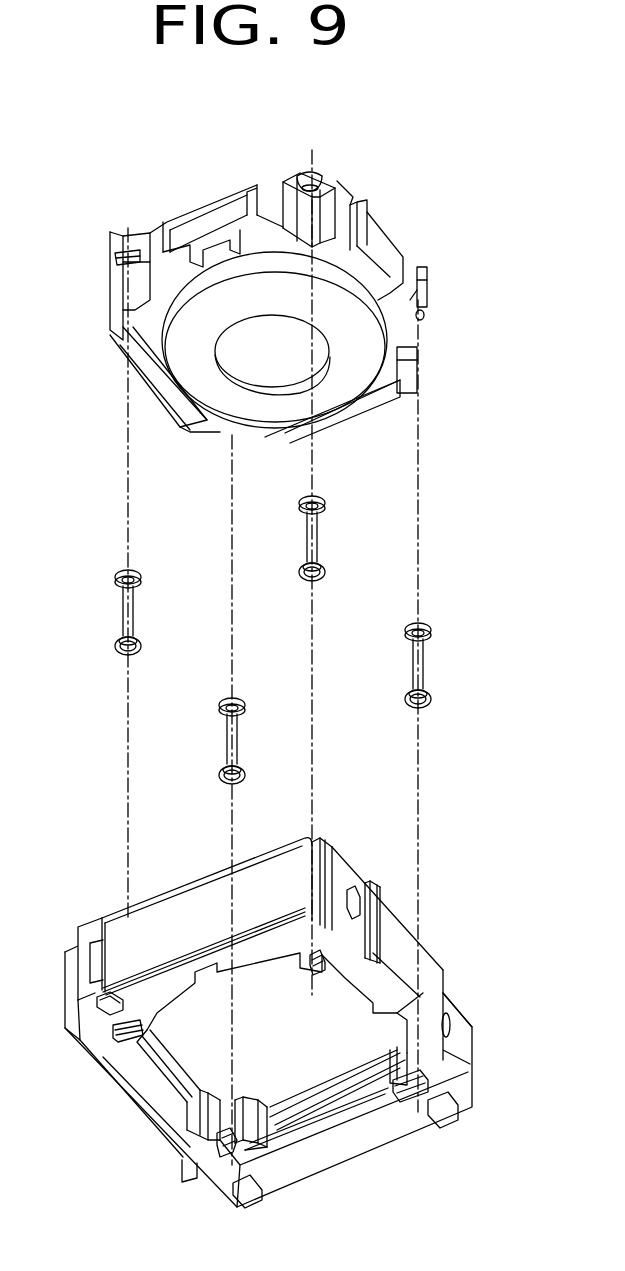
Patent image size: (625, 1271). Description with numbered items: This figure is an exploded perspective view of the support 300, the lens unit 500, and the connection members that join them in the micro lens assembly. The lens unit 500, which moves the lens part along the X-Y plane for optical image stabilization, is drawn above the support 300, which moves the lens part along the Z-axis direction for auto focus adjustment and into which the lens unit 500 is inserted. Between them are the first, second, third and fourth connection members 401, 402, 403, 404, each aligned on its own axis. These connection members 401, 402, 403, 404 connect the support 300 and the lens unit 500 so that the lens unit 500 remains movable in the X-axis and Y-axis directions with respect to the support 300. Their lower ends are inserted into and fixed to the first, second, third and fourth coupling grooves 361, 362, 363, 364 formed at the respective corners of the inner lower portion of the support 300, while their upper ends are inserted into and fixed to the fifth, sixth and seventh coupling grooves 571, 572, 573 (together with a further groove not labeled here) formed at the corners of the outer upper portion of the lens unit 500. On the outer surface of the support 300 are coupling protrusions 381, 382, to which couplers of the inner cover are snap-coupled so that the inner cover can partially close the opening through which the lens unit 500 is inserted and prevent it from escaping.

The support 300 is at (455, 960).
The first coupling groove 361 is at (403, 1097).
The second coupling groove 362 is at (335, 957).
The third coupling groove 363 is at (132, 1047).
The fourth coupling groove 364 is at (248, 1167).
The coupling protrusion 381 is at (443, 1030).
The coupling protrusion 382 is at (350, 958).
The first connection member 401 is at (423, 664).
The second connection member 402 is at (318, 534).
The third connection member 403 is at (133, 608).
The fourth connection member 404 is at (238, 731).
The lens unit 500 is at (392, 217).
The fifth coupling groove 571 is at (424, 312).
The sixth coupling groove 572 is at (313, 176).
The seventh coupling groove 573 is at (118, 250).